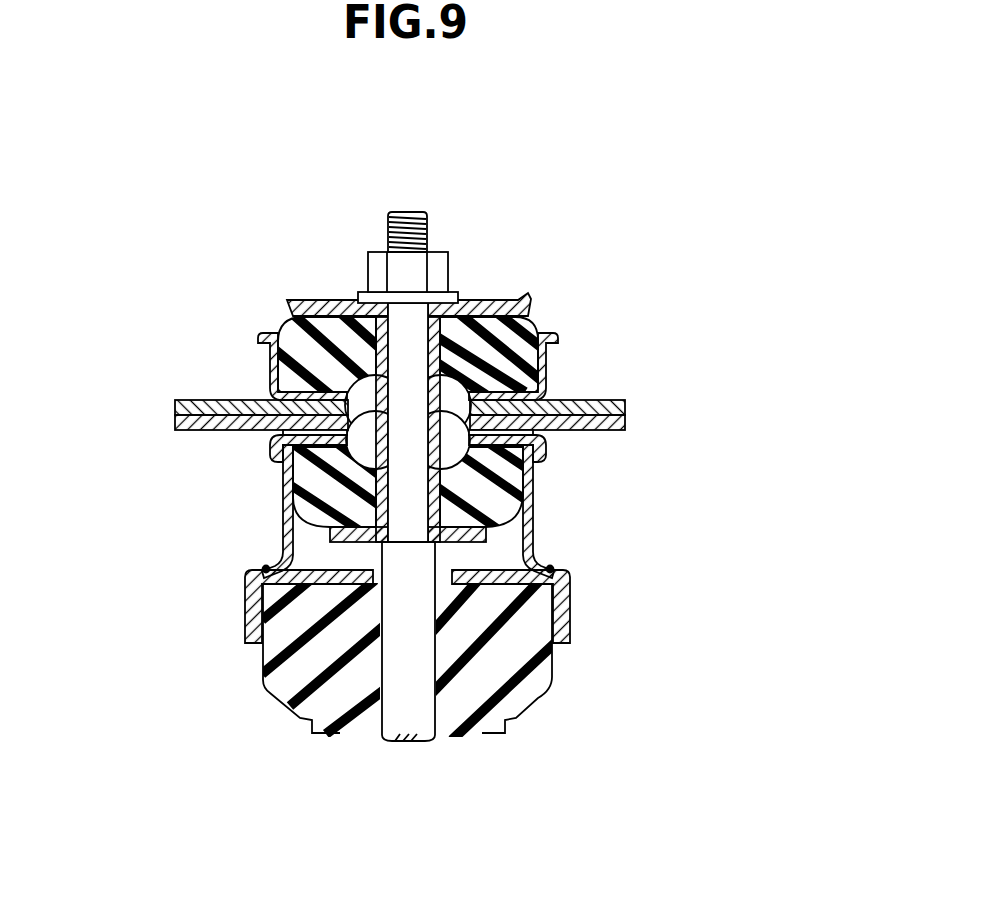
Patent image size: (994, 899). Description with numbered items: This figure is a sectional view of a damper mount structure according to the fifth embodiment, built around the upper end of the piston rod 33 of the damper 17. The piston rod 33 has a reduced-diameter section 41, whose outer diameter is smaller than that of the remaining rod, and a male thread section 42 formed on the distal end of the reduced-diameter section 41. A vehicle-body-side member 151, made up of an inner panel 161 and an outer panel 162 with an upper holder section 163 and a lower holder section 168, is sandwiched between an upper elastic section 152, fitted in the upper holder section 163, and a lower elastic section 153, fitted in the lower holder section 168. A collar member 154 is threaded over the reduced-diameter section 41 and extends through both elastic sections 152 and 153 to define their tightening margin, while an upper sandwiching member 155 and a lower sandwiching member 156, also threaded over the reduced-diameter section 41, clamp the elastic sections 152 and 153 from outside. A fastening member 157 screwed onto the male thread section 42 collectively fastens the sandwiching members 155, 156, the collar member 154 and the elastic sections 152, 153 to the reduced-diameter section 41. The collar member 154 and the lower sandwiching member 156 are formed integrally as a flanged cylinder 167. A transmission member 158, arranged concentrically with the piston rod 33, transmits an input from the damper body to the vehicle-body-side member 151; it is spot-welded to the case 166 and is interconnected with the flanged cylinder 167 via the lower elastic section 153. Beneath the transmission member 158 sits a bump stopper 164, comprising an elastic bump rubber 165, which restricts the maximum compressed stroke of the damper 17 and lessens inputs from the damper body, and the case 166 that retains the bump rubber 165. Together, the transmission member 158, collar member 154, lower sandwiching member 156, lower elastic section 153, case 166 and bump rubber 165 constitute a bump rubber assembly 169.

The damper 17 is at (430, 468).
The piston rod 33 is at (434, 665).
The reduced-diameter section 41 is at (402, 316).
The male thread section 42 is at (405, 222).
The vehicle-body-side member 151 is at (511, 432).
The upper elastic section 152 is at (535, 318).
The lower elastic section 153 is at (308, 476).
The collar member 154 is at (470, 490).
The upper sandwiching member 155 is at (477, 298).
The lower sandwiching member 156 is at (487, 537).
The fastening member 157 is at (437, 262).
The transmission member 158 is at (285, 520).
The inner panel 161 is at (548, 452).
The outer panel 162 is at (625, 410).
The upper holder section 163 is at (548, 362).
The bump stopper 164 is at (329, 655).
The bump rubber 165 is at (275, 652).
The case 166 is at (252, 606).
The flanged cylinder 167 is at (513, 474).
The lower holder section 168 is at (545, 500).
The bump rubber assembly 169 is at (291, 536).